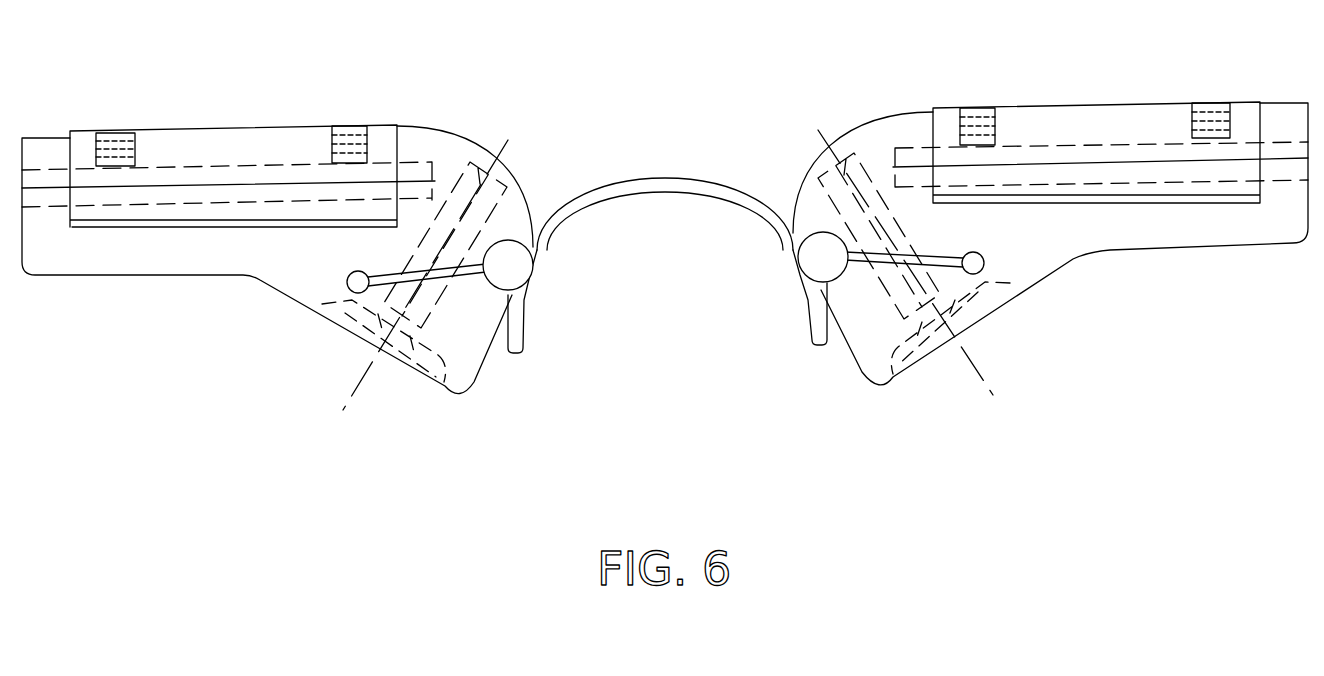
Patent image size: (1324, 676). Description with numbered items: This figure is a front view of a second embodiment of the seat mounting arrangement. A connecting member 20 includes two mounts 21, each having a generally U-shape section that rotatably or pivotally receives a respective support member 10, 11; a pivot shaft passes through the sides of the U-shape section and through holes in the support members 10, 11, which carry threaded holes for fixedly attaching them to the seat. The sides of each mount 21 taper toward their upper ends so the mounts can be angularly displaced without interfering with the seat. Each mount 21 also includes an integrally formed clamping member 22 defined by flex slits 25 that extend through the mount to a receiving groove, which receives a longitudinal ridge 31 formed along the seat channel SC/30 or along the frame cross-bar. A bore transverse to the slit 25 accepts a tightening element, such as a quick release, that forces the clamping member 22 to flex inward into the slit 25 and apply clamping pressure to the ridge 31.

The support member 10 is at (215, 145).
The support member 11 is at (1033, 117).
The connecting member 20 is at (648, 133).
The mount 21 is at (253, 285).
The clamping member 22 is at (457, 385).
The flex slit 25 is at (467, 272).
The spring clip SC 30 is at (770, 253).
The longitudinal ridge 31 is at (512, 265).